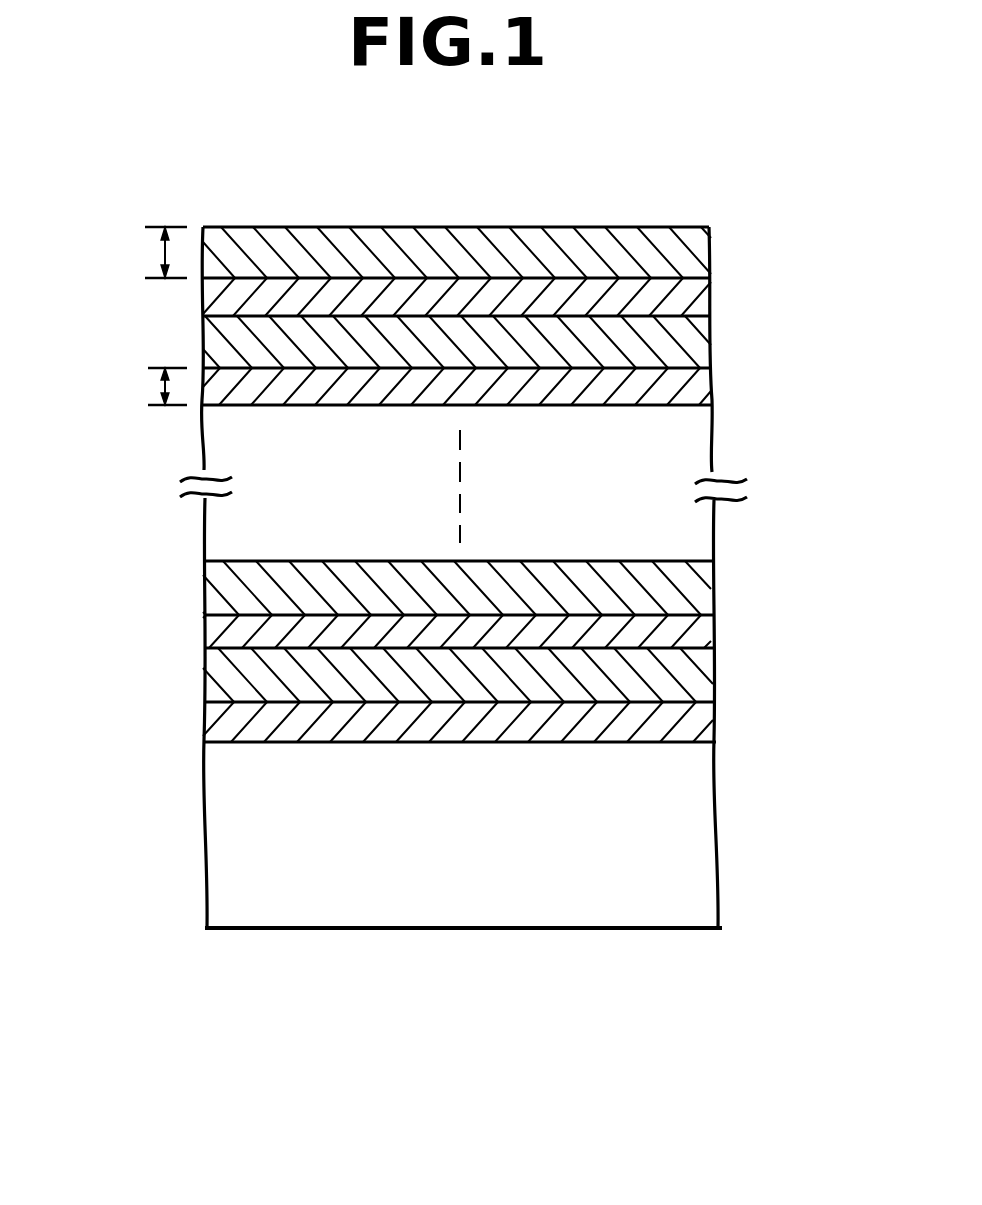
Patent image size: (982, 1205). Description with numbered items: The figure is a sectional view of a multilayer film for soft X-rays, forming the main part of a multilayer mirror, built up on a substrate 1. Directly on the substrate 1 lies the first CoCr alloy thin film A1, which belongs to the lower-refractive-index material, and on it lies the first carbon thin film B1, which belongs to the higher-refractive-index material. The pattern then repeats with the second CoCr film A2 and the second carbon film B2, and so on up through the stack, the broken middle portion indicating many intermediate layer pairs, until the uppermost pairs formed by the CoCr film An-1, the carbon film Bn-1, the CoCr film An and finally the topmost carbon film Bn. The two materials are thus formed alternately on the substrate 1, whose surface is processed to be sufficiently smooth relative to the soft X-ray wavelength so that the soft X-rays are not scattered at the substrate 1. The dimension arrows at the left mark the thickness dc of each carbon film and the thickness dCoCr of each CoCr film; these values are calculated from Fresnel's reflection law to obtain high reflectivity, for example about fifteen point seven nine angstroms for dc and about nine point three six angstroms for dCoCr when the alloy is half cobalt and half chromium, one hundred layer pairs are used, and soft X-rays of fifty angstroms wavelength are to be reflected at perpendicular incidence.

The substrate 1 is at (465, 893).
The thin film Bn is at (697, 249).
The thin film An is at (699, 299).
The thin film Bn-1 is at (697, 347).
The thin film An-1 is at (707, 394).
The thin film B2 is at (703, 574).
The thin film A2 is at (709, 631).
The thin film B1 is at (705, 666).
The thin film A1 is at (708, 731).
The thickness of C thin film dc is at (152, 250).
The thickness of CoCr thin film dCoCr is at (150, 388).